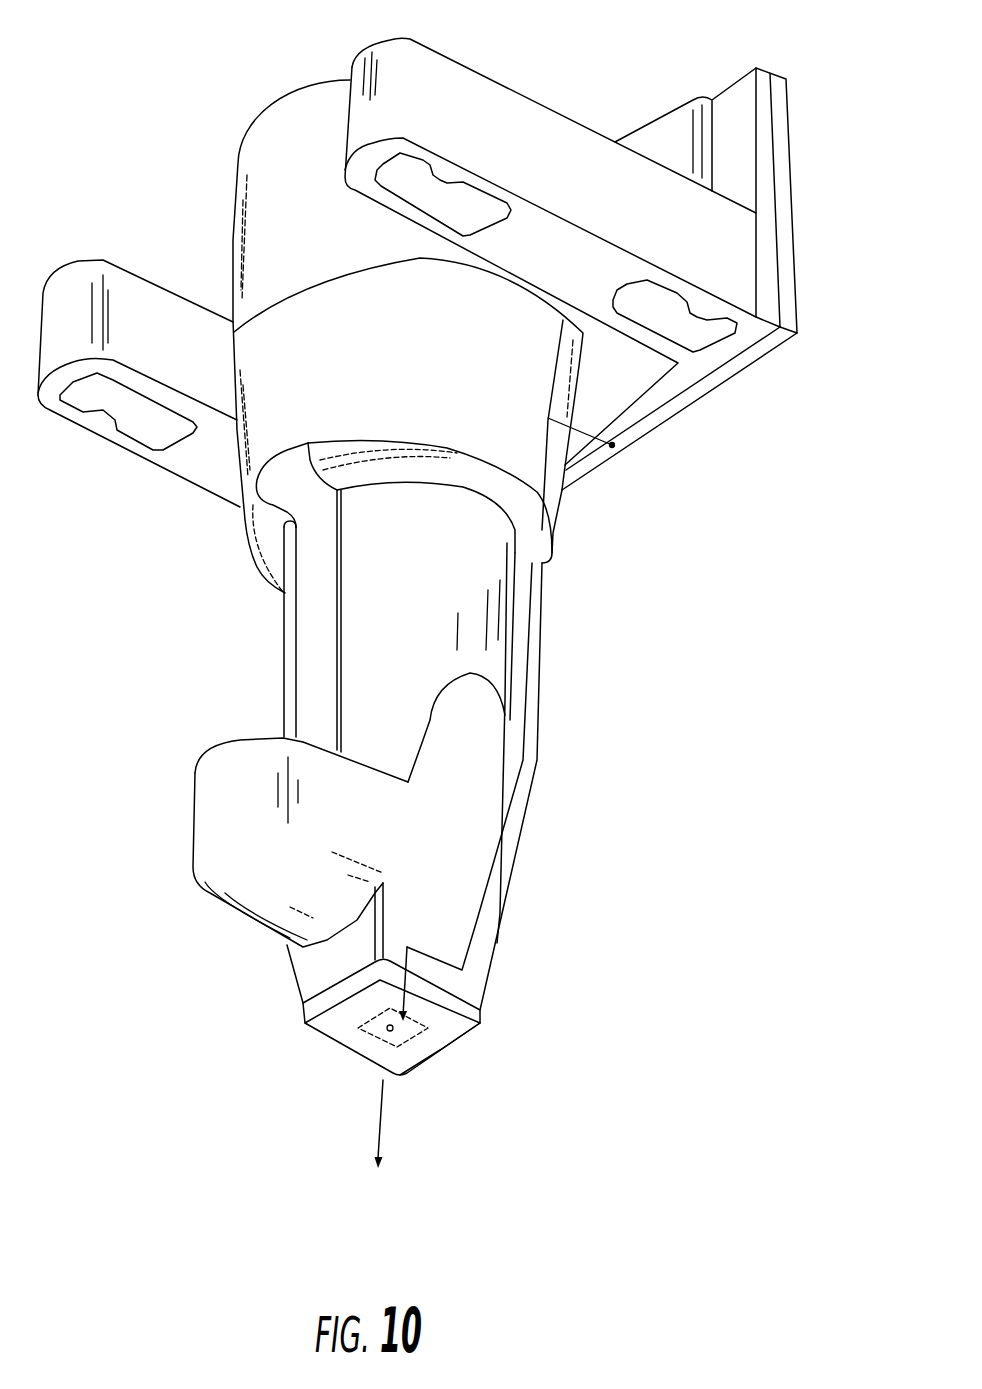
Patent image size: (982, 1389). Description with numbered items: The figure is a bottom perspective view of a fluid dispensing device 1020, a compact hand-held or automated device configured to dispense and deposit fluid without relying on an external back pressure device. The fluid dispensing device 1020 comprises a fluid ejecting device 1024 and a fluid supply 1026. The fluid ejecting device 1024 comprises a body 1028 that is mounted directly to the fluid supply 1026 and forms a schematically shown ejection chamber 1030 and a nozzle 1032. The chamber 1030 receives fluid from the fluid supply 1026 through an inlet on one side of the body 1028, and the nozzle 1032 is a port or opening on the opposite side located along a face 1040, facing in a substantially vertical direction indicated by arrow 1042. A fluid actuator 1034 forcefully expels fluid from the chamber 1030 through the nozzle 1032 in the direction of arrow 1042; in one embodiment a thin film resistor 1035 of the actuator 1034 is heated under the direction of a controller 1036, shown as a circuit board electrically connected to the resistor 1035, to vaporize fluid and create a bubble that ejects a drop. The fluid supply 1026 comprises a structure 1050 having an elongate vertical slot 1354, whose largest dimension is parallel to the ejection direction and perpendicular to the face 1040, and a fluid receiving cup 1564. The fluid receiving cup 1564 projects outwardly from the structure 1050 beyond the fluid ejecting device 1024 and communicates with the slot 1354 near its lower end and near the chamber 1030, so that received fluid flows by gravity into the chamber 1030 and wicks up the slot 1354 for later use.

The fluid dispensing device 1020 is at (115, 80).
The fluid supply 1026 is at (272, 106).
The controller 1036 is at (757, 352).
The structure 1050 is at (450, 582).
The elongate vertical slot 1354 is at (323, 655).
The fluid receiving cup 1564 is at (213, 832).
The fluid ejecting device 1024 is at (285, 1017).
The body 1028 is at (483, 1017).
The thin film resistor 1035 is at (408, 1019).
The face 1040 is at (457, 1033).
The nozzle 1032 is at (388, 1032).
The fluid actuator 1034 is at (455, 1056).
The ejection chamber 1030 is at (423, 1040).
The arrow 1042 is at (383, 1138).